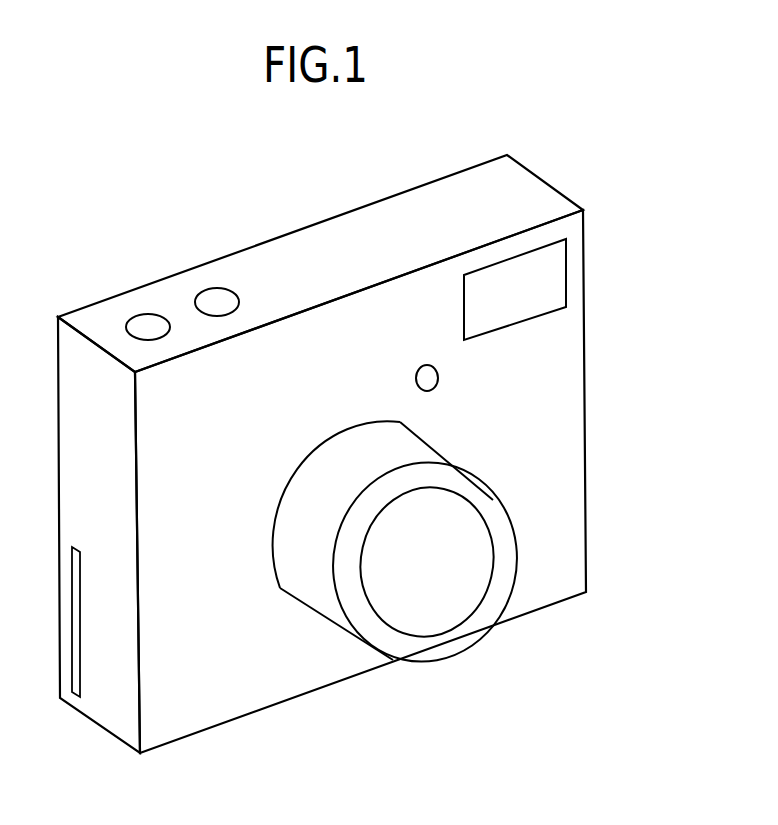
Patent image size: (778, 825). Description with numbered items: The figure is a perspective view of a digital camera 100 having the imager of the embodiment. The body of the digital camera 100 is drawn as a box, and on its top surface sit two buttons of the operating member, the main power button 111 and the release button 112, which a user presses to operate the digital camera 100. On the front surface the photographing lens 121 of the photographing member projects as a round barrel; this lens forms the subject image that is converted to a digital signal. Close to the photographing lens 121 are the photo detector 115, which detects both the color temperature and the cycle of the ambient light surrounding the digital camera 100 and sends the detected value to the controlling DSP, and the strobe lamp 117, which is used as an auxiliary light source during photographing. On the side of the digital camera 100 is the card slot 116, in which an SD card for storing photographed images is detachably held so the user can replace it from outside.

The digital camera 100 is at (574, 166).
The main power button 111 is at (217, 288).
The release button 112 is at (148, 314).
The photo detector 115 is at (439, 380).
The card slot 116 is at (76, 700).
The strobe lamp 117 is at (567, 278).
The photographing lens 121 is at (433, 658).